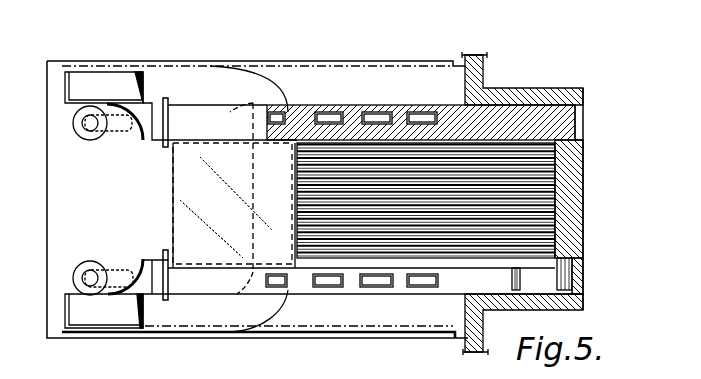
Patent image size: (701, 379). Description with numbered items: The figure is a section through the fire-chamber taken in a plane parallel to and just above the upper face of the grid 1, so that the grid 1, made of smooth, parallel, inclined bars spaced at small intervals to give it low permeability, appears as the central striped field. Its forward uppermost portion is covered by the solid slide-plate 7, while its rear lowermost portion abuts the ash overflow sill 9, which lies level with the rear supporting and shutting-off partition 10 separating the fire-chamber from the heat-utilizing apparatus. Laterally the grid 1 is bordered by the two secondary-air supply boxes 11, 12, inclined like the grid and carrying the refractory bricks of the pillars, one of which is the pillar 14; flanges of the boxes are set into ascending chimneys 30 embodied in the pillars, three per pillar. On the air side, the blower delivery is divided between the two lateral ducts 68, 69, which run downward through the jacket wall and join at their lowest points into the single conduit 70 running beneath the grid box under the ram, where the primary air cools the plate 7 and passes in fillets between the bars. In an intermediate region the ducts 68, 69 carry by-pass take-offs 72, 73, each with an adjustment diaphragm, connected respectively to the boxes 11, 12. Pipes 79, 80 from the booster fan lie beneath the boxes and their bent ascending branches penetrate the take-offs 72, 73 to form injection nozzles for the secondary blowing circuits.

The grid 1 is at (508, 155).
The solid slide-plate 7 is at (185, 200).
The ash overflow sill 9 is at (570, 222).
The rear supporting and shutting-off partition 10 is at (582, 283).
The secondary-air supply box 11 is at (260, 288).
The secondary-air supply box 12 is at (255, 110).
The pillar 14 is at (348, 116).
The ascending chimney 30 is at (422, 115).
The lateral duct 68 is at (100, 80).
The lateral duct 69 is at (104, 311).
The single conduit 70 is at (212, 78).
The by-pass take-off 72 is at (143, 135).
The by-pass take-off 73 is at (133, 270).
The pipe 79 is at (103, 131).
The pipe 80 is at (102, 268).